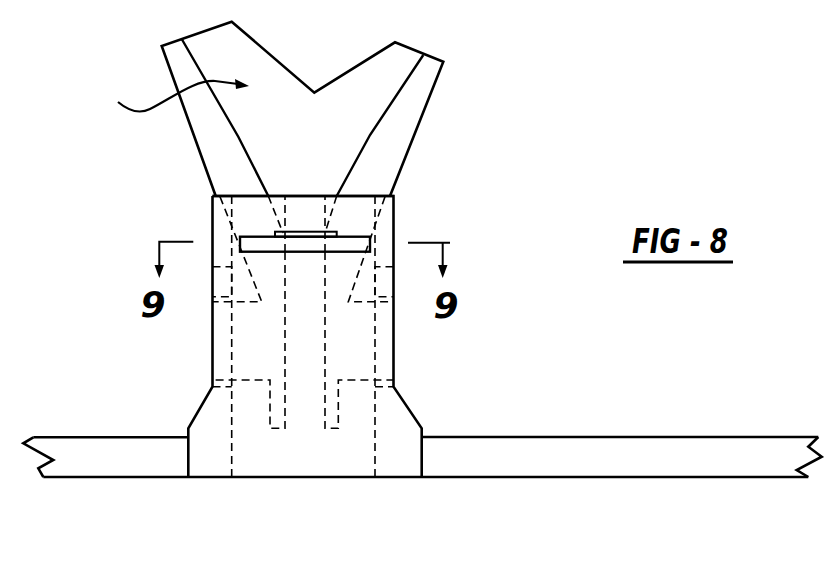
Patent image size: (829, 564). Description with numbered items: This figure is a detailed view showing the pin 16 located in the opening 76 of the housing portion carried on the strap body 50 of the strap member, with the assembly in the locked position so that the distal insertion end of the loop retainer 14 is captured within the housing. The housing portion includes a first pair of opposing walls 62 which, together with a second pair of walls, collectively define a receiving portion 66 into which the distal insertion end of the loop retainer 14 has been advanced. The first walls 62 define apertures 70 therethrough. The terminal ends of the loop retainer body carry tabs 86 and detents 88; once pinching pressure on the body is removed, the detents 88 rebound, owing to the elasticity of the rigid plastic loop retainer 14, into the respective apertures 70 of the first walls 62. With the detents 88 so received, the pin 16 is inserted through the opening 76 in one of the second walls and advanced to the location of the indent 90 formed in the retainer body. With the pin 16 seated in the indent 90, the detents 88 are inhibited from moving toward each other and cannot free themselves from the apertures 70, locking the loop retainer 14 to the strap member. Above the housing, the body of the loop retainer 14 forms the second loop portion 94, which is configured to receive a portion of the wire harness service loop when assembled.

The loop retainer 14 is at (423, 102).
The pin 16 is at (353, 233).
The strap body 50 is at (688, 458).
The first pair of opposing walls 62 is at (212, 227).
The receiving portion 66 is at (376, 201).
The apertures 70 is at (213, 382).
The opening 76 is at (270, 233).
The tabs 86 is at (270, 417).
The detents 88 is at (222, 335).
The indents 90 is at (300, 233).
The second loop portion 94 is at (172, 95).